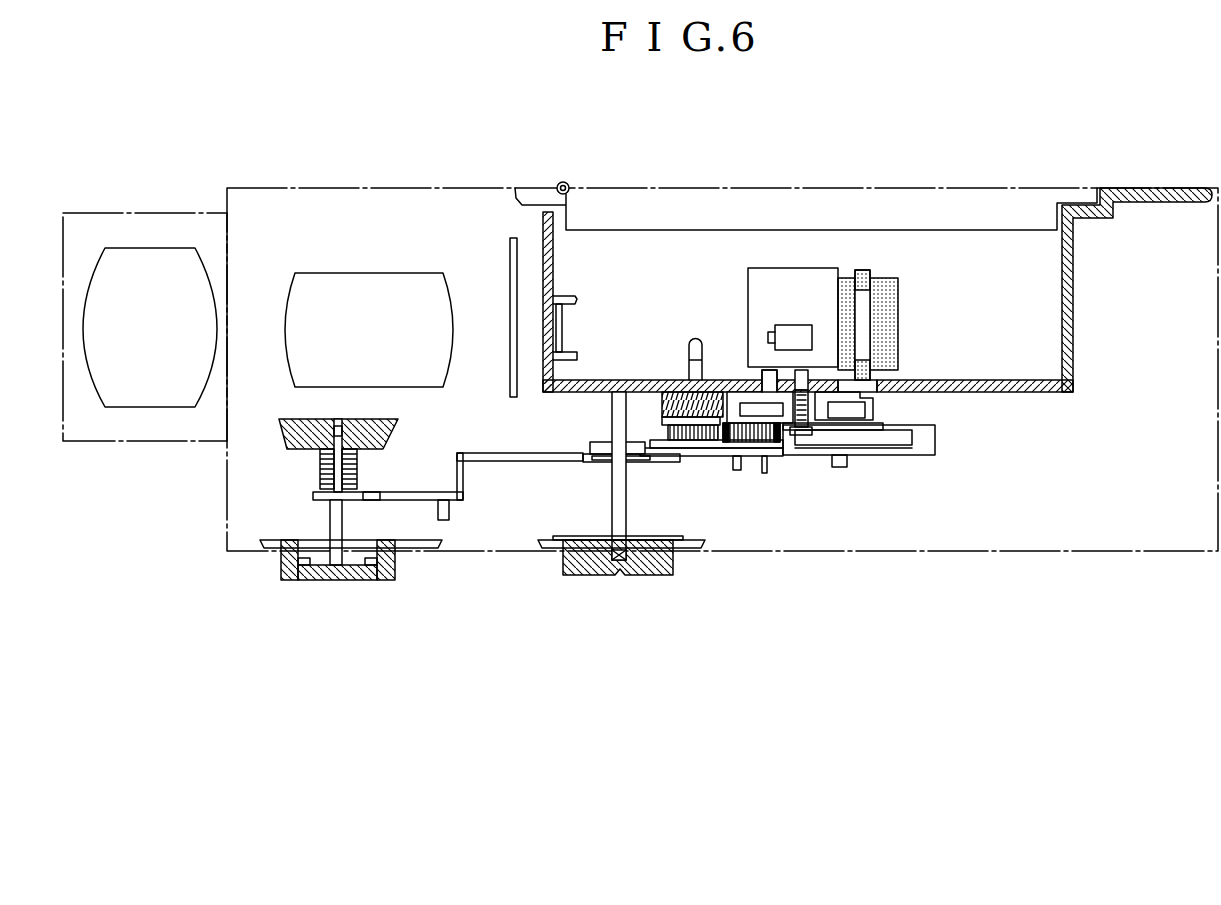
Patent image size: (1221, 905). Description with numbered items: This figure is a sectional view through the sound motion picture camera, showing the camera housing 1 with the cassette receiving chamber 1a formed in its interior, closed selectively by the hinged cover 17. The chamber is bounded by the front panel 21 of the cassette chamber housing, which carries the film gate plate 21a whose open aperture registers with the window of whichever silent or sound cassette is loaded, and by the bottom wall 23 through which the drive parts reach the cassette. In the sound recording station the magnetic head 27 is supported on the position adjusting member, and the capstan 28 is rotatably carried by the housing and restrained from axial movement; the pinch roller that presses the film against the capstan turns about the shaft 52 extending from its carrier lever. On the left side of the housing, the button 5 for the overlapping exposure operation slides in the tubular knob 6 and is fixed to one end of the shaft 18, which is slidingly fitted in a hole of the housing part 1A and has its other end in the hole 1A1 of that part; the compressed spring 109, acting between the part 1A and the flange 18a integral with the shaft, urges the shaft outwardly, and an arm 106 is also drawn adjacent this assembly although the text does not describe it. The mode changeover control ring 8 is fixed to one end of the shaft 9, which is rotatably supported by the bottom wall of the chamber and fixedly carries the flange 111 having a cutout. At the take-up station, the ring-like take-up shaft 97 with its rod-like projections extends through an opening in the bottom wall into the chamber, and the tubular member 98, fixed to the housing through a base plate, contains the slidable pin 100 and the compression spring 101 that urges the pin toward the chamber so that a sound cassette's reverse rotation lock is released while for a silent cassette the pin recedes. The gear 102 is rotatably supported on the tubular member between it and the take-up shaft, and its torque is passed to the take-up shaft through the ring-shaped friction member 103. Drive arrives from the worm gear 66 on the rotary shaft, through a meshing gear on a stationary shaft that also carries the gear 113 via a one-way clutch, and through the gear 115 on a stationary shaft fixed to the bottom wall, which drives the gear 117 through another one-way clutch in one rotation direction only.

The camera housing 1 is at (1164, 469).
The cassette receiving chamber 1a is at (998, 323).
The part of the camera housing 1A is at (291, 438).
The hole 1A1 is at (337, 421).
The button 5 is at (336, 573).
The tubular knob 6 is at (393, 572).
The mode changeover control ring 8 is at (652, 562).
The shaft 9 is at (617, 508).
The cover 17 is at (851, 205).
The shaft 18 is at (339, 528).
The flange 18a is at (315, 498).
The front panel 21 is at (551, 258).
The film gate plate 21a is at (572, 300).
The bottom wall 23 is at (1031, 391).
The magnetic head 27 is at (795, 330).
The capstan 28 is at (862, 300).
The shaft 52 is at (885, 304).
The worm gear 66 is at (783, 446).
The take-up shaft 97 is at (747, 386).
The tubular member 98 is at (778, 396).
The slidable pin 100 is at (806, 372).
The compression spring 101 is at (806, 433).
The gear 102 is at (728, 446).
The friction member 103 is at (846, 408).
The lift arm 106 is at (497, 453).
The compressed spring 109 is at (358, 491).
The flange 111 is at (598, 444).
The gear 113 is at (760, 434).
The gear 115 is at (676, 394).
The gear 117 is at (689, 440).